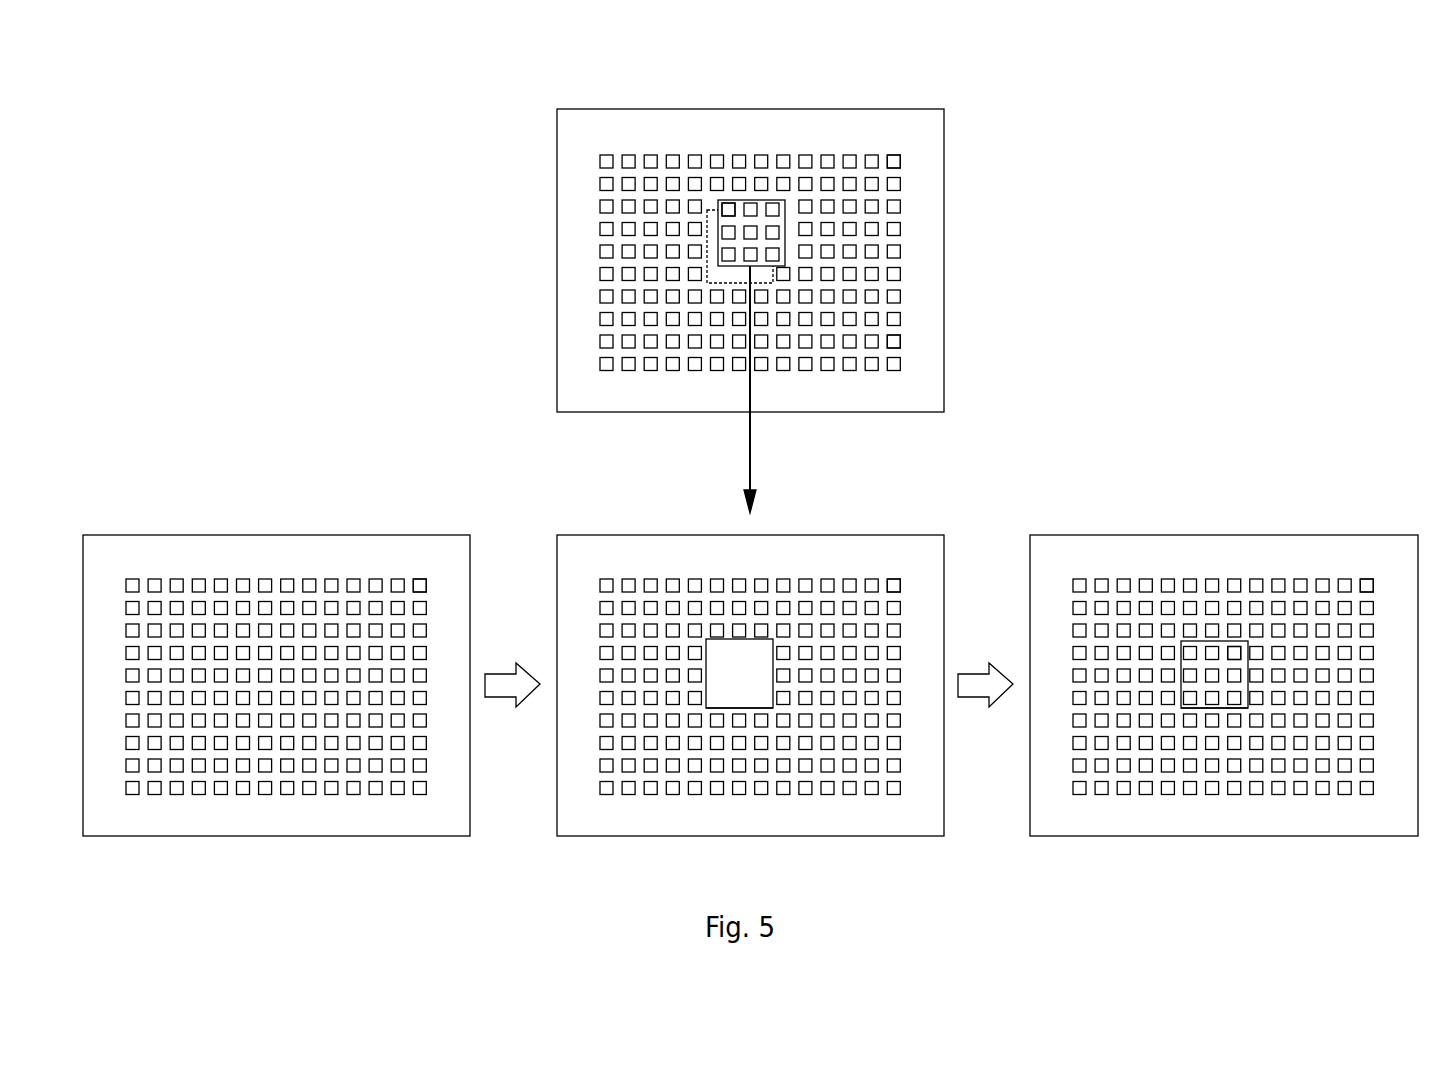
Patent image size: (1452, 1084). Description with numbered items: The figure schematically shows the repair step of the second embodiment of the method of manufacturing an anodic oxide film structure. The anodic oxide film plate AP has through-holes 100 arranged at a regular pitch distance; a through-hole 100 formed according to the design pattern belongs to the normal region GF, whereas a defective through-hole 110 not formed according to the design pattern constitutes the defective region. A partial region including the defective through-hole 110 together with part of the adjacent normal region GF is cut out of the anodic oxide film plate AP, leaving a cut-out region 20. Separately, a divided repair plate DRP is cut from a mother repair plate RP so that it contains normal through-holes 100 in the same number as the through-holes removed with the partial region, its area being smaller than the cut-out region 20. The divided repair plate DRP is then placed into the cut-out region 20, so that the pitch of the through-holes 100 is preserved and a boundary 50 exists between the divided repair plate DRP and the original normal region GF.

The through-hole 100 is at (902, 161).
The defective through-hole 110 is at (245, 680).
The cut-out region 20 is at (742, 668).
The boundary 50 is at (750, 709).
The divided repair plate DRP is at (787, 242).
The normal region GF is at (741, 205).
The mother repair plate RP is at (937, 88).
The anodic oxide film plate AP is at (369, 510).